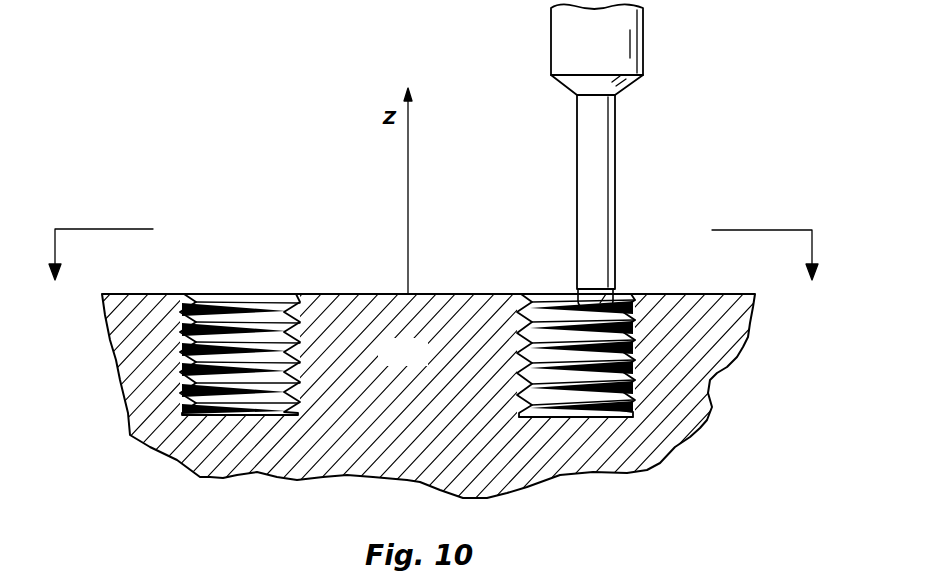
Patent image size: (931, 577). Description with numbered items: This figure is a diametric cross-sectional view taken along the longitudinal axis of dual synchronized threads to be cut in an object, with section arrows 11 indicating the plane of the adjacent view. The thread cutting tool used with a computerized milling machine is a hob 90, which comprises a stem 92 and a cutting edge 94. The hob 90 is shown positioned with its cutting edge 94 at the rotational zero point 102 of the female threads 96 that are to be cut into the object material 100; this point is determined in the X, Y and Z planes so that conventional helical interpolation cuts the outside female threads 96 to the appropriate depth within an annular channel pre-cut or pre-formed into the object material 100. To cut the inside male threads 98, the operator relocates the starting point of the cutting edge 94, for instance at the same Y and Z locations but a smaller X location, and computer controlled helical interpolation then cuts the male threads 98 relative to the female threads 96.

The section line 11- 11 is at (431, 267).
The hob 90 is at (672, 102).
The stem 92 is at (600, 195).
The cutting edge 94 is at (612, 292).
The female threads 96 is at (628, 414).
The male threads 98 is at (284, 332).
The object material 100 is at (421, 361).
The rotational zero point 102 is at (646, 298).